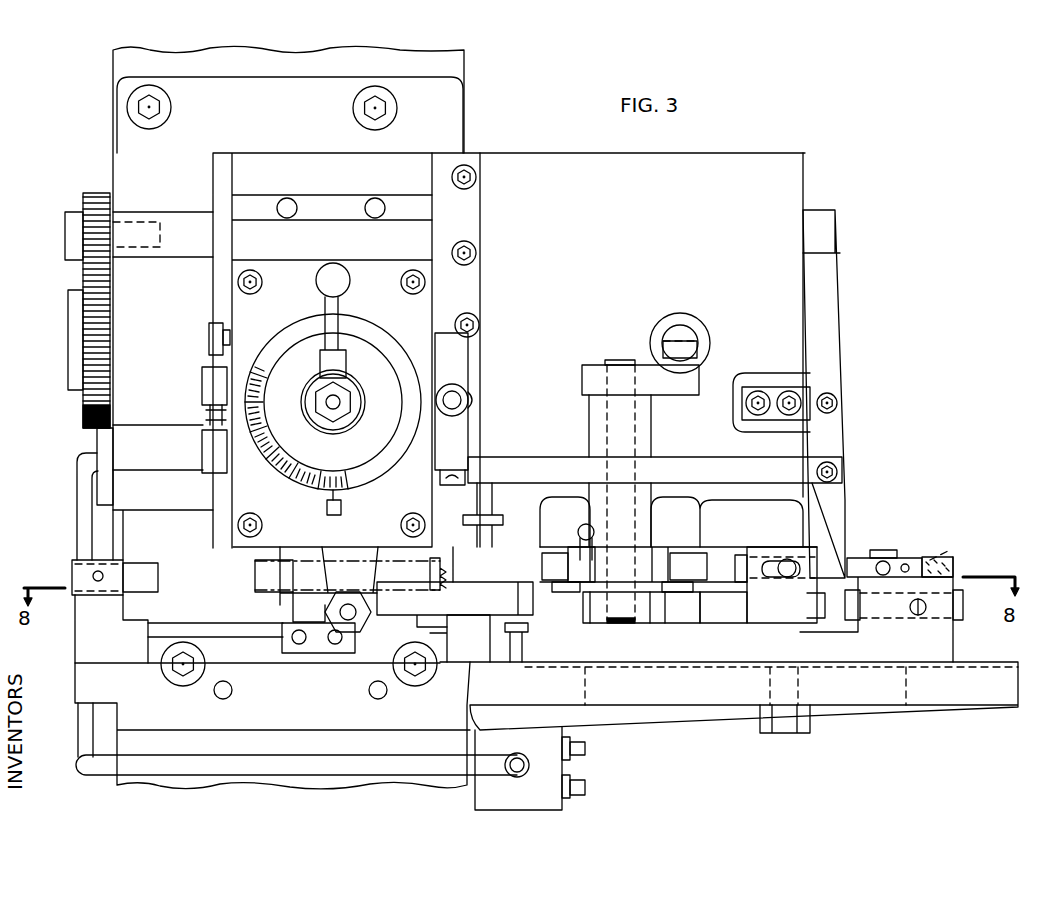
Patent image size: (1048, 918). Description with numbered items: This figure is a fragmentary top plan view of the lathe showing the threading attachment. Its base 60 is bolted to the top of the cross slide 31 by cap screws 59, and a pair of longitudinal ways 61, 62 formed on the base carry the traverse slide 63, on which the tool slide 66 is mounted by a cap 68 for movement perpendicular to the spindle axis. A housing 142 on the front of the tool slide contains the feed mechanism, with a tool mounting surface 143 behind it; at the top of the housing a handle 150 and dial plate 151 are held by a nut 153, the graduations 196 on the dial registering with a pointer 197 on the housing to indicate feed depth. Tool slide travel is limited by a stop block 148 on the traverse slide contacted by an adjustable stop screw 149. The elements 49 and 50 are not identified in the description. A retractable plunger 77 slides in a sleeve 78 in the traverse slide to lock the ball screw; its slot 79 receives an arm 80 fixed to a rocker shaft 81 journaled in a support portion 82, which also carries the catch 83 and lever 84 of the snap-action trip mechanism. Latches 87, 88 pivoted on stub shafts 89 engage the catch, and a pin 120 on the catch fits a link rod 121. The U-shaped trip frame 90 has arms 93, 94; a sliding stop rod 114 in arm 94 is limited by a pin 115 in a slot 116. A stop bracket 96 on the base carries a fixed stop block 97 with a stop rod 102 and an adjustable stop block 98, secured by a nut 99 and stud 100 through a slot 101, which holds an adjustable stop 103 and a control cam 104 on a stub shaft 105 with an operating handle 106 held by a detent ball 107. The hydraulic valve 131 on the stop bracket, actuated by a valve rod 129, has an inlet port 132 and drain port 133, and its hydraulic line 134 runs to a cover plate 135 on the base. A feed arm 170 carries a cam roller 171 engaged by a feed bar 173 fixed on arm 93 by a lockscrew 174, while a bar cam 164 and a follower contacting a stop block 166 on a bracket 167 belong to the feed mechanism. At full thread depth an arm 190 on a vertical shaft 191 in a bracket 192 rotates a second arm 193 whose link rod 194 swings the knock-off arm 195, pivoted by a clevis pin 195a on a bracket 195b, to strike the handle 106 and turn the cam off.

The cross slide 31 is at (470, 57).
The gear 49 is at (86, 195).
The gear hub 50 is at (84, 415).
The cap screws 59 is at (160, 116).
The base 60 is at (278, 118).
The longitudinal way 61 is at (183, 218).
The longitudinal way 62 is at (168, 430).
The traverse slide 63 is at (650, 208).
The tool slide 66 is at (336, 156).
The cap 68 is at (473, 213).
The retractable plunger 77 is at (692, 334).
The sleeve 78 is at (678, 316).
The slot 79 is at (700, 352).
The arm 80 is at (590, 368).
The rocker shaft 81 is at (626, 360).
The support portion 82 is at (644, 432).
The catch 83 is at (645, 524).
The lever 84 is at (625, 626).
The latch 87 is at (546, 578).
The latch 88 is at (698, 552).
The stub shafts 89 is at (566, 592).
The trip frame 90 is at (780, 611).
The arm 93 is at (466, 616).
The arm 94 is at (718, 622).
The stop bracket 96 is at (310, 702).
The fixed stop block 97 is at (84, 637).
The adjustable stop block 98 is at (946, 640).
The nut 99 is at (806, 726).
The stud 100 is at (786, 688).
The longitudinal slot 101 is at (905, 715).
The stop rod 102 is at (145, 586).
The adjustable stop 103 is at (905, 614).
The control cam 104 is at (938, 542).
The stub shaft 105 is at (886, 550).
The operating handle 106 is at (904, 562).
The spring loaded detent ball 107 is at (950, 550).
The sliding stop rod 114 is at (738, 572).
The pin 115 is at (787, 562).
The slot 116 is at (770, 564).
The pin 120 is at (578, 548).
The link rod 121 is at (586, 524).
The valve rod 129 is at (520, 642).
The three-port hydraulic valve 131 is at (488, 804).
The inlet port 132 is at (585, 790).
The drain port 133 is at (585, 750).
The hydraulic line 134 is at (108, 776).
The cover plate 135 is at (100, 450).
The housing 142 is at (404, 313).
The tool mounting surface 143 is at (370, 193).
The stop block 148 is at (210, 450).
The adjustable stop screw 149 is at (208, 418).
The handle 150 is at (326, 302).
The dial plate 151 is at (384, 462).
The nut 153 is at (345, 392).
The bar cam 164 is at (258, 568).
The stop block 166 is at (322, 648).
The bracket 167 is at (293, 602).
The feed arm 170 is at (364, 567).
The cam roller 171 is at (371, 603).
The feed bar 173 is at (486, 611).
The lockscrew 174 is at (498, 492).
The arm 190 is at (436, 426).
The vertical shaft 191 is at (452, 400).
The bracket 192 is at (460, 352).
The second arm 193 is at (456, 484).
The link rod 194 is at (518, 462).
The knock-off arm 195 is at (832, 490).
The clevis pin 195a is at (835, 390).
The bracket 195b is at (768, 388).
The graduations 196 is at (288, 470).
The pointer 197 is at (327, 508).